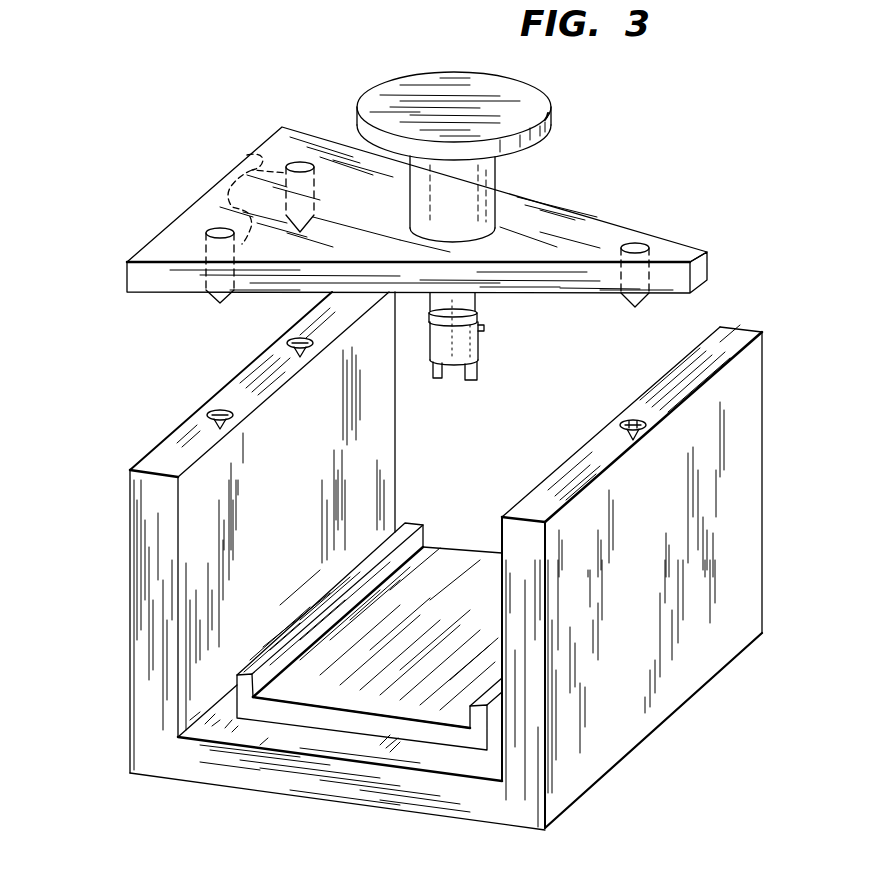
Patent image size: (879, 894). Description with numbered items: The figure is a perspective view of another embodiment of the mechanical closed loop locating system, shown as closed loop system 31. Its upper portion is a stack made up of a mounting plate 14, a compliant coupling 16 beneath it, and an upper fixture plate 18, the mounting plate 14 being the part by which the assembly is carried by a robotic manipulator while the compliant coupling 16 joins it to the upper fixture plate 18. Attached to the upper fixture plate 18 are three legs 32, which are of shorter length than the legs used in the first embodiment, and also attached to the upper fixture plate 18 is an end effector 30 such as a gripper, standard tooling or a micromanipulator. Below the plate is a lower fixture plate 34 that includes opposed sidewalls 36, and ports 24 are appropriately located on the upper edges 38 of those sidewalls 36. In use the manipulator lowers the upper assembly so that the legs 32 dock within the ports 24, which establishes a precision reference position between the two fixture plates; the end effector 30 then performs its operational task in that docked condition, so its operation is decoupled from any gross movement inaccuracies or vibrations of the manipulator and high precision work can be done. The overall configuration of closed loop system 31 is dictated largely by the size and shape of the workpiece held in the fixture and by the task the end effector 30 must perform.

The mounting plate 14 is at (552, 128).
The compliant coupling 16 is at (483, 183).
The upper fixture plate 18 is at (582, 222).
The ports 24 is at (287, 341).
The end effector 30 is at (482, 335).
The closed loop system 31 is at (117, 165).
The legs 32 is at (245, 155).
The lower fixture plate 34 is at (262, 782).
The sidewalls 36 is at (143, 663).
The upper edges 38 is at (183, 443).